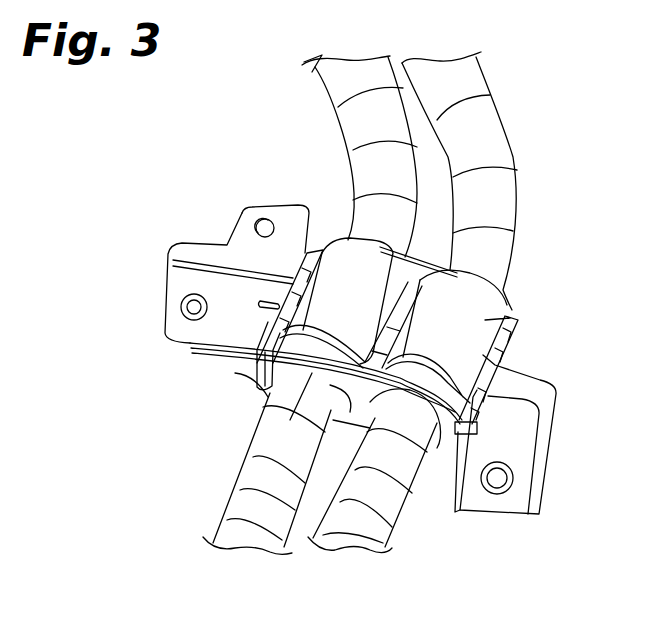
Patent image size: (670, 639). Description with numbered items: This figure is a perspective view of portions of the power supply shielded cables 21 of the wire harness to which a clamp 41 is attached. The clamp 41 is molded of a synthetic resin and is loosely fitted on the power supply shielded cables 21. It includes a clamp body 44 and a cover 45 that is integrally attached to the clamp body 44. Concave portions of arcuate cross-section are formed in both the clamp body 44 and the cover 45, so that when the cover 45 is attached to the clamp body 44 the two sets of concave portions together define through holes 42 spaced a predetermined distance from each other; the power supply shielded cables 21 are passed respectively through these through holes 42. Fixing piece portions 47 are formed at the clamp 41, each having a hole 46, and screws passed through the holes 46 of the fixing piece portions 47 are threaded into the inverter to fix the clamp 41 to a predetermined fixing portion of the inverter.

The power supply shielded cables 21 is at (336, 88).
The clamp 41 is at (516, 303).
The through holes 42 is at (257, 395).
The clamp body 44 is at (253, 368).
The cover 45 is at (515, 325).
The hole 46 is at (257, 223).
The fixing piece portions 47 is at (170, 330).